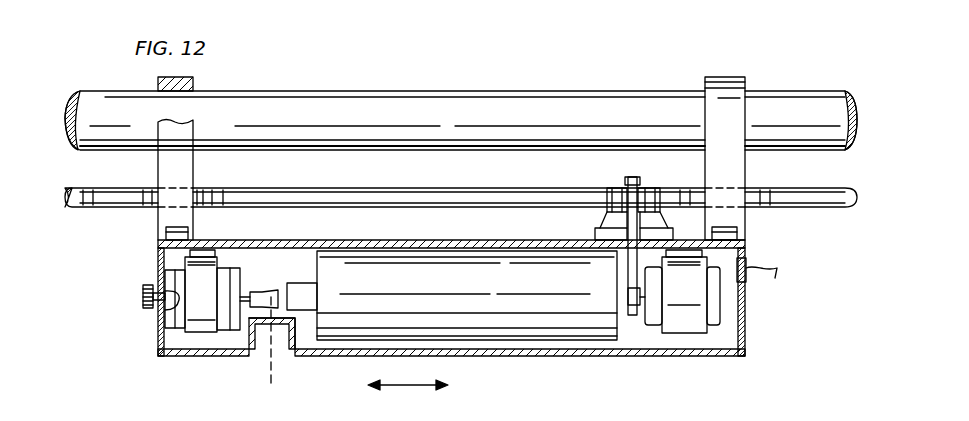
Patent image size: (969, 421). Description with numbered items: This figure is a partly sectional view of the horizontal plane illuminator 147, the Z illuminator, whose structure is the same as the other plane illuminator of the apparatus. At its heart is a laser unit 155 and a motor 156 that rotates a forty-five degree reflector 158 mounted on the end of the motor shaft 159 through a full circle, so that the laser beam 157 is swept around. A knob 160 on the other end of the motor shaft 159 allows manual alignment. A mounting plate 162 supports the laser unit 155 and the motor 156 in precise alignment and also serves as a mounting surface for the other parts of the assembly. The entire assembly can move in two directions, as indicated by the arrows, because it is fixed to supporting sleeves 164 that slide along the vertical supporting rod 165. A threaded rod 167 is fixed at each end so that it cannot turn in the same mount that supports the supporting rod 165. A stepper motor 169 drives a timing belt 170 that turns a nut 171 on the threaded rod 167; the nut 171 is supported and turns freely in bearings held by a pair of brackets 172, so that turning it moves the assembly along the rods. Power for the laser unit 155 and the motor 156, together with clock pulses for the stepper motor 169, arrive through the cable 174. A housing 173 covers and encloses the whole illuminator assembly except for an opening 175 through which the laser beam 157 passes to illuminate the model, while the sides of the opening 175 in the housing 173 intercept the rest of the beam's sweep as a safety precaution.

The horizontal plane illuminator 147 is at (533, 177).
The laser unit 155 is at (470, 226).
The motor 156 is at (421, 321).
The laser beam 157 is at (275, 382).
The 45 degree reflector 158 is at (260, 290).
The motor shaft 159 is at (165, 312).
The knob 160 is at (145, 302).
The mounting plate 162 is at (157, 244).
The supporting sleeves 164 is at (188, 81).
The vertical supporting rod 165 is at (348, 107).
The threaded rod 167 is at (348, 172).
The stepper motor 169 is at (720, 300).
The timing belt 170 is at (635, 315).
The nut 171 is at (648, 193).
The brackets 172 is at (643, 183).
The housing 173 is at (520, 356).
The cable 174 is at (762, 264).
The opening 175 is at (255, 345).